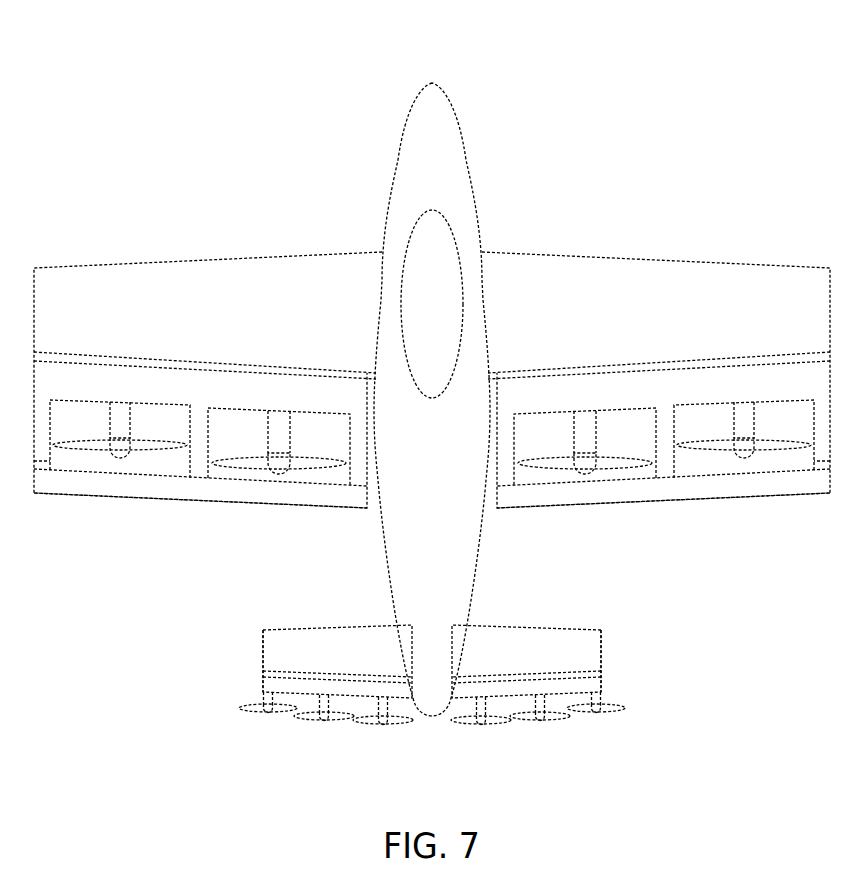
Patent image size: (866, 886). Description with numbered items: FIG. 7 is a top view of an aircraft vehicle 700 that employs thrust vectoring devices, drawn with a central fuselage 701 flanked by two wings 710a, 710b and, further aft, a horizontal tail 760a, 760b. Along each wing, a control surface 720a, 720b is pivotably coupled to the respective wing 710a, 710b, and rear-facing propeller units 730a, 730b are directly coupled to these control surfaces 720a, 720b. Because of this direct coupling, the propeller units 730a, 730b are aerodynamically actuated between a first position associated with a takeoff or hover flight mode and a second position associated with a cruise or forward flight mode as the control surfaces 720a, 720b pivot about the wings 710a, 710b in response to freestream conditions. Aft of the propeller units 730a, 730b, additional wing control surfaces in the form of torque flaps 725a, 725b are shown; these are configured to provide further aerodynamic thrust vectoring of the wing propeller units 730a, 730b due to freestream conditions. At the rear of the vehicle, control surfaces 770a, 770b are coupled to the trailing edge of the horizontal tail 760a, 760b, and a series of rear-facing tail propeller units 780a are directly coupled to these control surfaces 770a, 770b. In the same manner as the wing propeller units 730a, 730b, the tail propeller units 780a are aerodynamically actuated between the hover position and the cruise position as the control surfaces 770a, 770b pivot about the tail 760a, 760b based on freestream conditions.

The aircraft vehicle 700 is at (476, 66).
The fuselage 701 is at (372, 590).
The wing 710a is at (235, 318).
The wing 710b is at (693, 318).
The control surface 720a is at (243, 401).
The control surface 720b is at (695, 401).
The torque flap 725a is at (195, 493).
The torque flap 725b is at (669, 493).
The propeller unit 730a is at (118, 492).
The propeller unit 730b is at (591, 490).
The horizontal tail 760a is at (372, 665).
The horizontal tail 760b is at (550, 665).
The control surface 770a is at (252, 681).
The control surface 770b is at (612, 681).
The tail propeller unit 780a is at (686, 780).